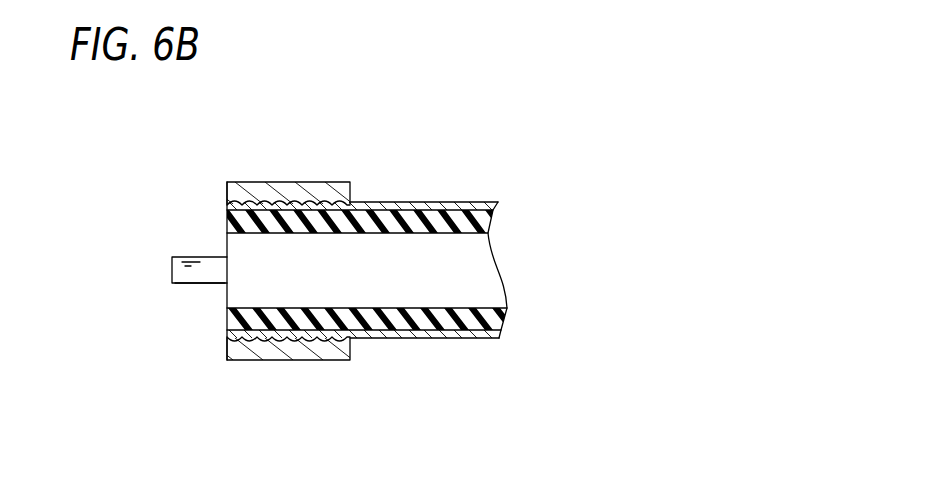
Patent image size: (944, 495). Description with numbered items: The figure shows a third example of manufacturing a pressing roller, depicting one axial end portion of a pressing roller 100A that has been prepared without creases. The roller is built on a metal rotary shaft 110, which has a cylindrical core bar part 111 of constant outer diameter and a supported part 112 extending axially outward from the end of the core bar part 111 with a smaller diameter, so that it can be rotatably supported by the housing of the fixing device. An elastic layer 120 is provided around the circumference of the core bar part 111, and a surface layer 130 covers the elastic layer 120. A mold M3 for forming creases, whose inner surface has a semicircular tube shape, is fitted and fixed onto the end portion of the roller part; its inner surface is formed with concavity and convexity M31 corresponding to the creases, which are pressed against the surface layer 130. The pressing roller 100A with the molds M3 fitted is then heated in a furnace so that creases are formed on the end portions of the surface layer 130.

The pressing roller having no creases 100A is at (499, 179).
The mold for forming creases M3 is at (305, 178).
The concavity and convexity M31 is at (294, 206).
The surface layer 130 is at (377, 198).
The elastic layer 120 is at (428, 216).
The core bar part 111 is at (403, 292).
The rotary shaft 110 is at (193, 249).
The supported part 112 is at (193, 278).